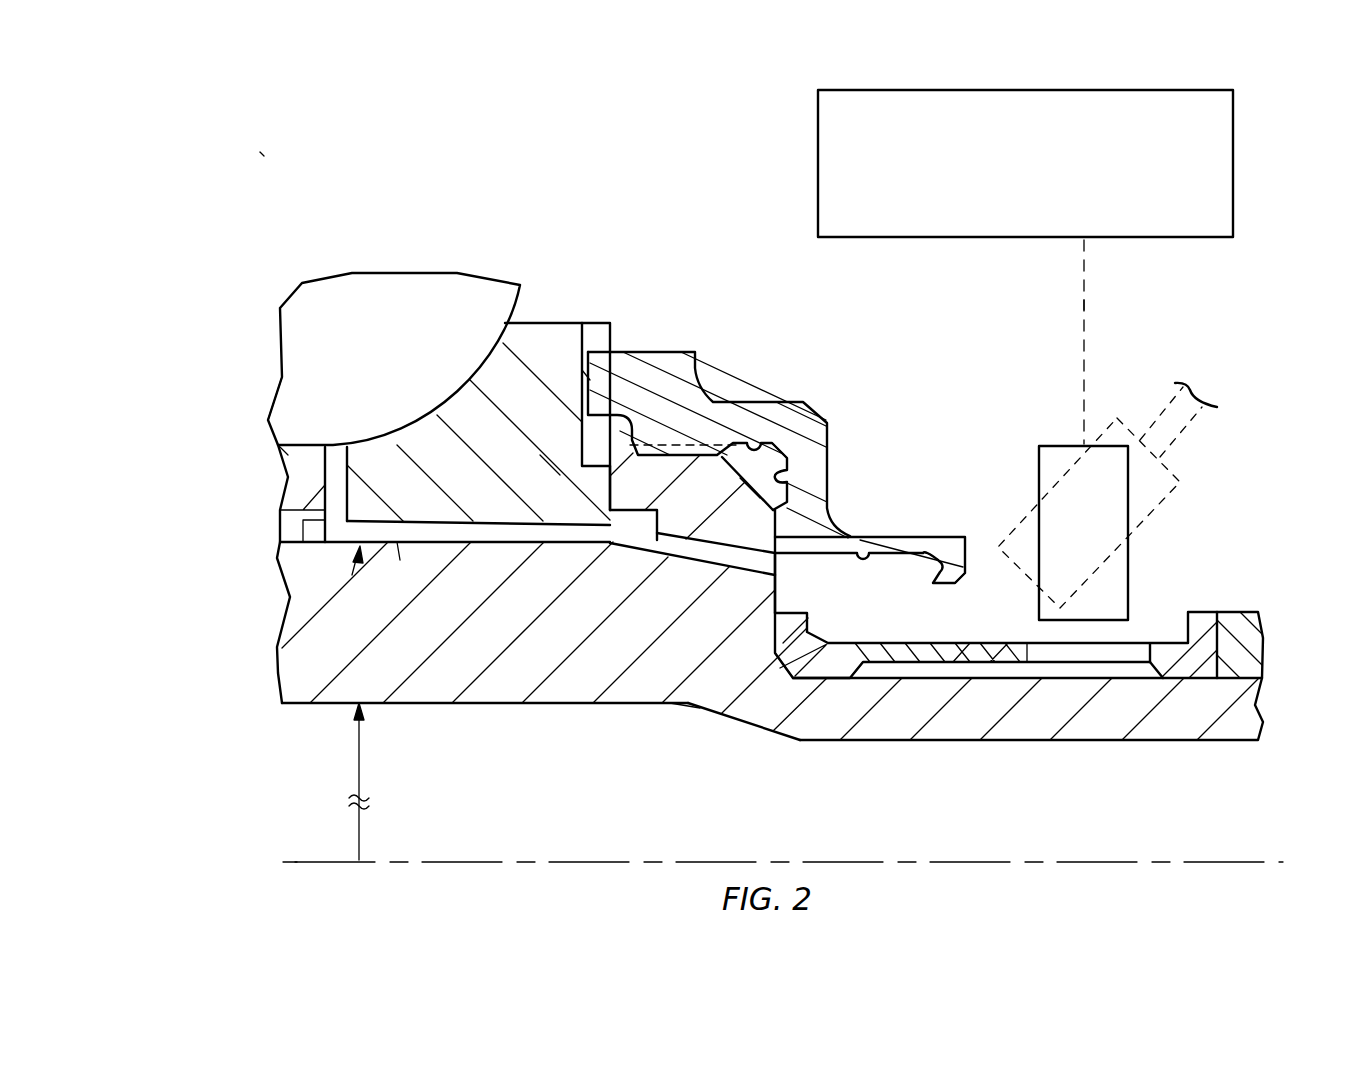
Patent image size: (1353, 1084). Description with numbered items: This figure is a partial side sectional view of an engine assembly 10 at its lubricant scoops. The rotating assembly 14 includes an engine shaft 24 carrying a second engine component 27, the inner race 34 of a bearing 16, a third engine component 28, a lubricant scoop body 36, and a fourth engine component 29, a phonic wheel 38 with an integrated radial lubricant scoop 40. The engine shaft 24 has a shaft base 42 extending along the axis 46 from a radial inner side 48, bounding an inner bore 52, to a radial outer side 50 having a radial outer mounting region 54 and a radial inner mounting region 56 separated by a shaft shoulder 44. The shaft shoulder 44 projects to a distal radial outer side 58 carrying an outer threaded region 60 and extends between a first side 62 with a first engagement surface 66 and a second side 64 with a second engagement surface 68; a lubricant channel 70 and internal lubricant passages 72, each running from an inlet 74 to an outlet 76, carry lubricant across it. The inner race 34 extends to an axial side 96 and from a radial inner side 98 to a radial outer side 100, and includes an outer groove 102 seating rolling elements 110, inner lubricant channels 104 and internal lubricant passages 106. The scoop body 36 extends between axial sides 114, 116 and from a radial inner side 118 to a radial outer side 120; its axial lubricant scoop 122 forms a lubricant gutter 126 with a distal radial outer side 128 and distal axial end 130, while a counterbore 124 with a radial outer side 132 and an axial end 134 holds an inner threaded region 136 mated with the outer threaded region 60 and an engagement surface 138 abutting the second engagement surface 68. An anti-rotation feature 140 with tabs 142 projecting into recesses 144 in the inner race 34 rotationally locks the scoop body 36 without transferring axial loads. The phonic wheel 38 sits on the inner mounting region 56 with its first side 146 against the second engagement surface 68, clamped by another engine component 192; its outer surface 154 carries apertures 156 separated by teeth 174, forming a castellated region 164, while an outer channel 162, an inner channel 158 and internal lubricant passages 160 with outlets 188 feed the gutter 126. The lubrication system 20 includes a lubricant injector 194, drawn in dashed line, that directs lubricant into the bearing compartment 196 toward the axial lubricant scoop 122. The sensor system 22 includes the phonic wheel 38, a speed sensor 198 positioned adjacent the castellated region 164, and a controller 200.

The engine assembly 10 is at (256, 145).
The rotating assembly 14 is at (236, 712).
The bearing 16 is at (394, 314).
The lubrication system 20 is at (1210, 380).
The sensor system 22 is at (1262, 112).
The engine shaft 24 is at (278, 632).
The second engine component 27 is at (641, 266).
The third engine component 28 is at (880, 496).
The fourth engine component 29 is at (1253, 614).
The inner race 34 is at (604, 270).
The lubricant scoop body 36 is at (880, 496).
The phonic wheel 38 is at (1253, 614).
The integrated radial lubricant scoop 40 is at (1081, 690).
The shaft base 42 is at (439, 633).
The shaft shoulder 44 is at (716, 492).
The axis 46 is at (336, 866).
The radial inner side 48 is at (420, 703).
The radial outer side 50 is at (432, 522).
The inner bore 52 is at (316, 800).
The radial outer mounting region 54 is at (352, 575).
The radial inner mounting region 56 is at (915, 700).
The distal radial outer side 58 is at (719, 424).
The outer threaded region 60 is at (690, 352).
The shoulder first side 62 is at (507, 456).
The shoulder second side 64 is at (870, 525).
The shoulder first engagement surface 66 is at (570, 480).
The shoulder second engagement surface 68 is at (778, 512).
The lubricant channel 70 is at (630, 545).
The internal lubricant passages 72 is at (688, 700).
The inlet 74 is at (778, 568).
The outlet 76 is at (620, 555).
The axial side 96 is at (610, 323).
The radial inner side 98 is at (505, 545).
The radial outer side 100 is at (535, 323).
The outer groove 102 is at (290, 398).
The inner lubricant channels 104 is at (400, 545).
The internal lubricant passages 106 is at (337, 483).
The rolling elements 110 is at (400, 365).
The body first side 114 is at (583, 371).
The body second side 116 is at (968, 560).
The radial inner side 118 is at (945, 585).
The radial outer side 120 is at (680, 352).
The axial lubricant scoop 122 is at (957, 515).
The counterbore 124 is at (784, 448).
The lubricant gutter 126 is at (887, 580).
The distal radial outer side 128 is at (868, 548).
The distal axial end 130 is at (928, 548).
The radial outer side 132 is at (761, 438).
The axial end 134 is at (788, 478).
The inner threaded region 136 is at (666, 447).
The body engagement surface 138 is at (772, 540).
The anti-rotation feature 140 is at (511, 287).
The anti-rotation tabs 142 is at (582, 370).
The recess 144 is at (598, 330).
The wheel first side 146 is at (772, 650).
The outer surface 154 is at (920, 636).
The wheel apertures 156 is at (1110, 658).
The lubricant inner channel 158 is at (960, 680).
The internal lubricant passages 160 is at (855, 658).
The wheel outer channel 162 is at (1168, 615).
The castellated region 164 is at (1140, 615).
The phonic wheel tooth 174 is at (1062, 643).
The passage outlet 188 is at (860, 640).
The other engine component 192 is at (1265, 645).
The lubricant injector 194 is at (1172, 468).
The bearing compartment 196 is at (980, 335).
The speed sensor 198 is at (1065, 446).
The controller 200 is at (1235, 210).